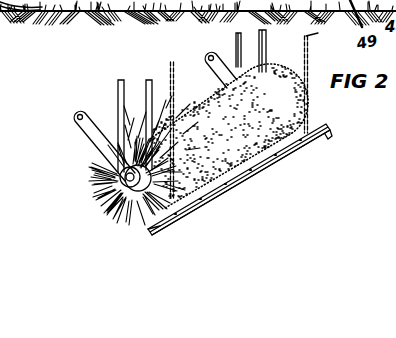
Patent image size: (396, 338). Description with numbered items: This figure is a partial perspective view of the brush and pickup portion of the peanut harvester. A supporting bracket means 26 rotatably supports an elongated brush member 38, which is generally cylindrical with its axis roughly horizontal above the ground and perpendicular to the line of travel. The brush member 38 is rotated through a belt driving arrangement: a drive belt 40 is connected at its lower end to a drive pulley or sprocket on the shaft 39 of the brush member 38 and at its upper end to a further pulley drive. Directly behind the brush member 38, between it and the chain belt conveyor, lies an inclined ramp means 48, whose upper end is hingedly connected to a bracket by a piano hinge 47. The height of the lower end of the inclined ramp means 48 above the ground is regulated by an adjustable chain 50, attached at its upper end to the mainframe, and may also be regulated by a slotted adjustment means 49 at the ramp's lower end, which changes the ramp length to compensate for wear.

The supporting bracket means 26 is at (80, 107).
The brush member 38 is at (175, 172).
The shaft 39 is at (150, 166).
The drive belt 40 is at (118, 85).
The piano hinge 47 is at (288, 154).
The inclined ramp means 48 is at (197, 210).
The slotted adjustment means 49 is at (160, 228).
The adjustable chain 50 is at (177, 57).